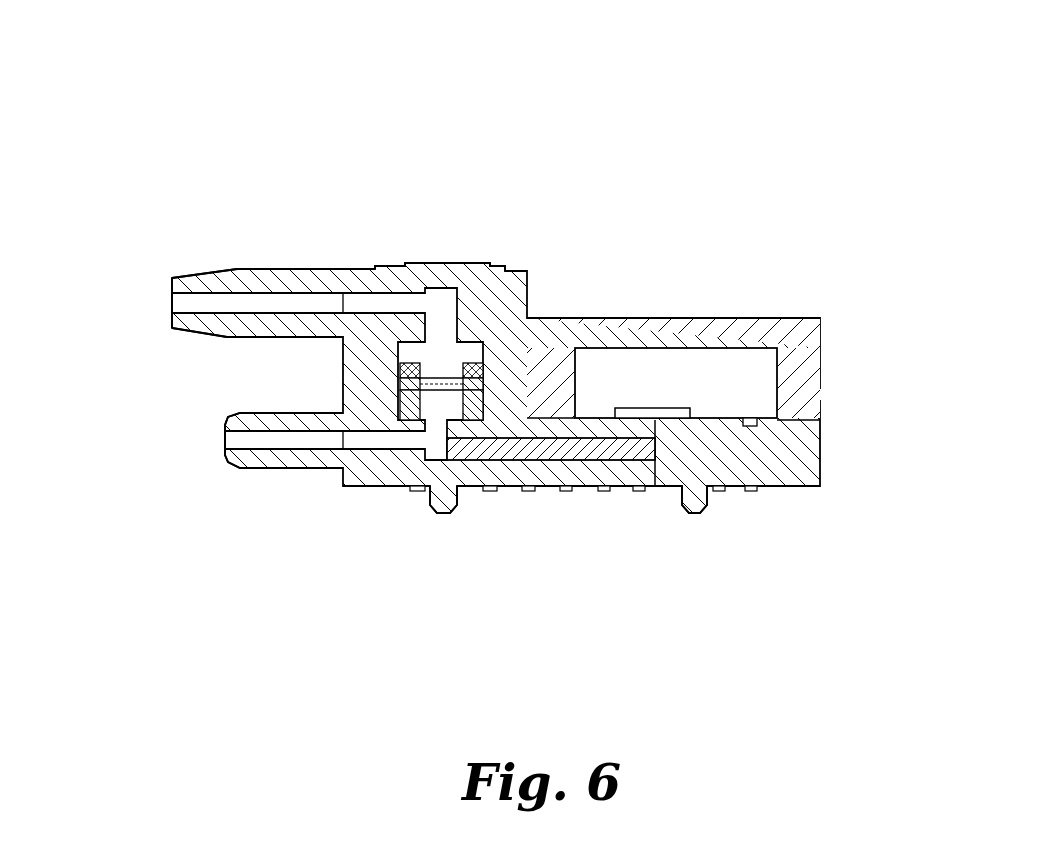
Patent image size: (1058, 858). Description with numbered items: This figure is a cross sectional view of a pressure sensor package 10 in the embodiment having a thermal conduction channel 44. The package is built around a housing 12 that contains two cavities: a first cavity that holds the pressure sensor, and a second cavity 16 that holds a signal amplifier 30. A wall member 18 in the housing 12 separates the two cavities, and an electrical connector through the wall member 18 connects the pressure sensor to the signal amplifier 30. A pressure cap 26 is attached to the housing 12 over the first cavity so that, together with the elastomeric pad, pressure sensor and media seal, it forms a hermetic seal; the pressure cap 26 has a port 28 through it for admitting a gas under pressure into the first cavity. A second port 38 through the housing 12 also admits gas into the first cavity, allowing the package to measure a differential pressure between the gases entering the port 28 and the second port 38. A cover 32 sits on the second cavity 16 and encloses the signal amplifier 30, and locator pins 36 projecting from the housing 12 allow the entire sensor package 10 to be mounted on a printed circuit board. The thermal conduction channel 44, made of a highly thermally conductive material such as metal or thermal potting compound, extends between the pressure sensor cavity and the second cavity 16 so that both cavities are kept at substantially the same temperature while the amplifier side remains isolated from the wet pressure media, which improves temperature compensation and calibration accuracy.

The sensor package 10 is at (497, 339).
The housing 12 is at (783, 443).
The second cavity 16 is at (718, 402).
The wall member 18 is at (507, 363).
The pressure cap 26 is at (385, 268).
The port 28 is at (245, 278).
The signal amplifier 30 is at (647, 414).
The cover 32 is at (590, 322).
The locator pins 36 is at (440, 505).
The second port 38 is at (297, 460).
The thermal conduction channel 44 is at (635, 452).